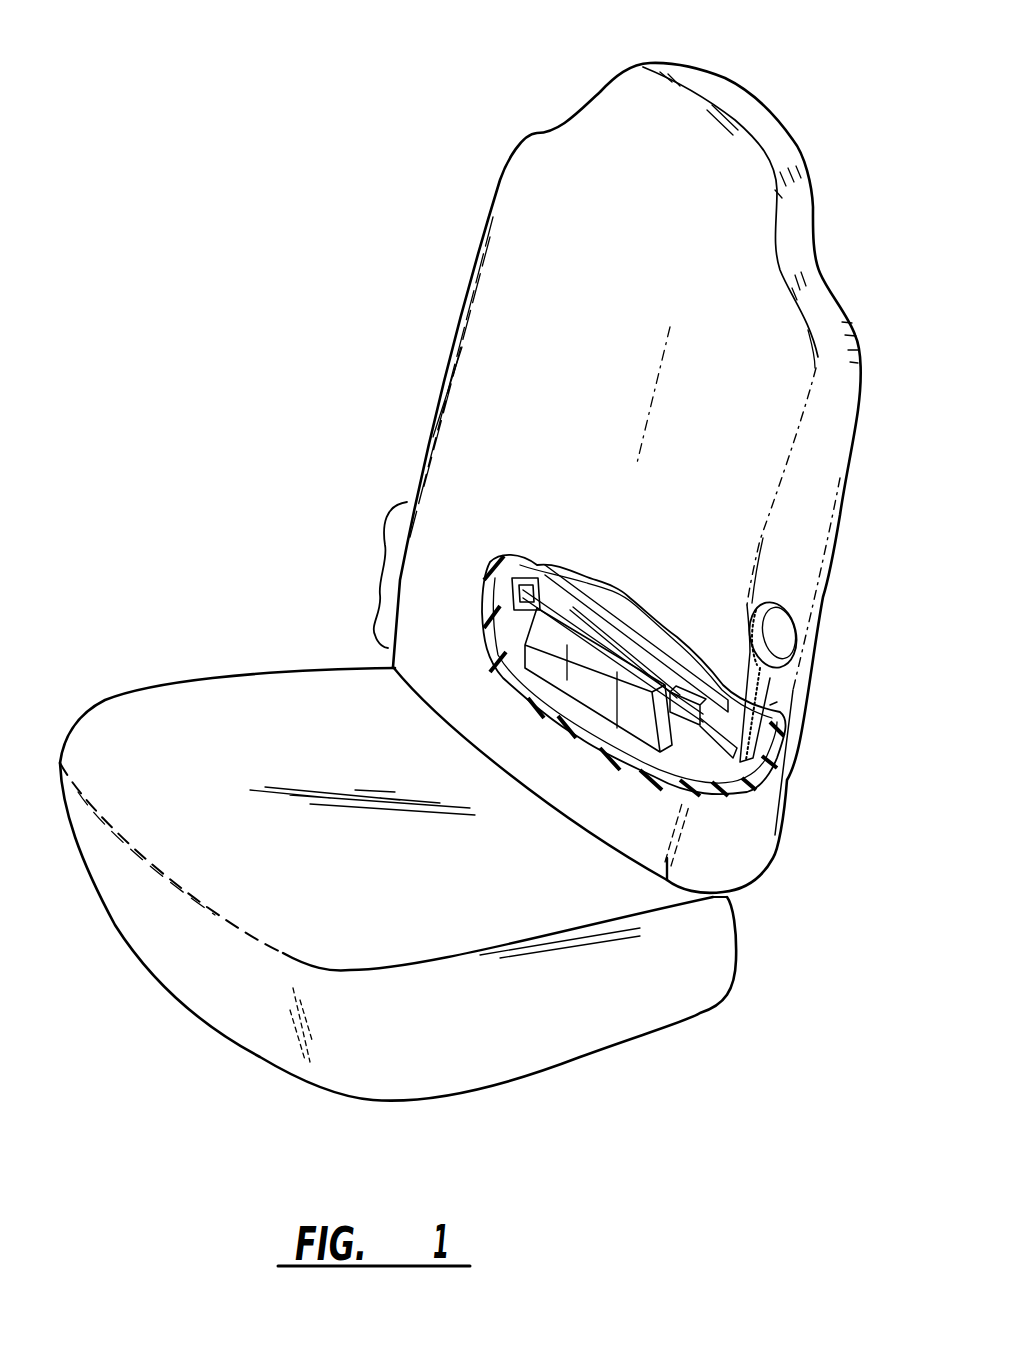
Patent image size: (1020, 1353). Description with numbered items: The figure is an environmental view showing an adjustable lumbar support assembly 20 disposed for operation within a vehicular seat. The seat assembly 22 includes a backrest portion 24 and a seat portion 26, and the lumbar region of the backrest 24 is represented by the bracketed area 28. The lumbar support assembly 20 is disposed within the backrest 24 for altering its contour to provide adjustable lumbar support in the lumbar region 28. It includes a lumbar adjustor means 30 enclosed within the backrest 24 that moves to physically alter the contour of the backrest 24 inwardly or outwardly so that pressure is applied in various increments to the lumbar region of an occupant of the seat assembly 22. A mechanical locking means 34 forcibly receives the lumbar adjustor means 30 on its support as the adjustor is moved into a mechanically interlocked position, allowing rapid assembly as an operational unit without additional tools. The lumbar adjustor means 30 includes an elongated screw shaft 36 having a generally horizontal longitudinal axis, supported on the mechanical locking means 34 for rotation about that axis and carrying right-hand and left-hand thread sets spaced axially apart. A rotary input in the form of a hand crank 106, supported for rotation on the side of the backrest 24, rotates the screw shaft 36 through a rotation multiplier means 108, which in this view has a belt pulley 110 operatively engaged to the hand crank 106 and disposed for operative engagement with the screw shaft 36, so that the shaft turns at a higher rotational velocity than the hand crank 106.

The adjustable lumbar support assembly 20 is at (689, 657).
The seat assembly 22 is at (463, 550).
The backrest portion 24 is at (586, 478).
The seat portion 26 is at (190, 700).
The lumbar region 28 is at (359, 575).
The lumbar adjustor means 30 is at (575, 703).
The mechanical locking means 34 is at (664, 640).
The screw shaft 36 is at (548, 603).
The hand crank 106 is at (785, 612).
The rotation multiplier means 108 is at (793, 705).
The belt pulley 110 is at (790, 697).